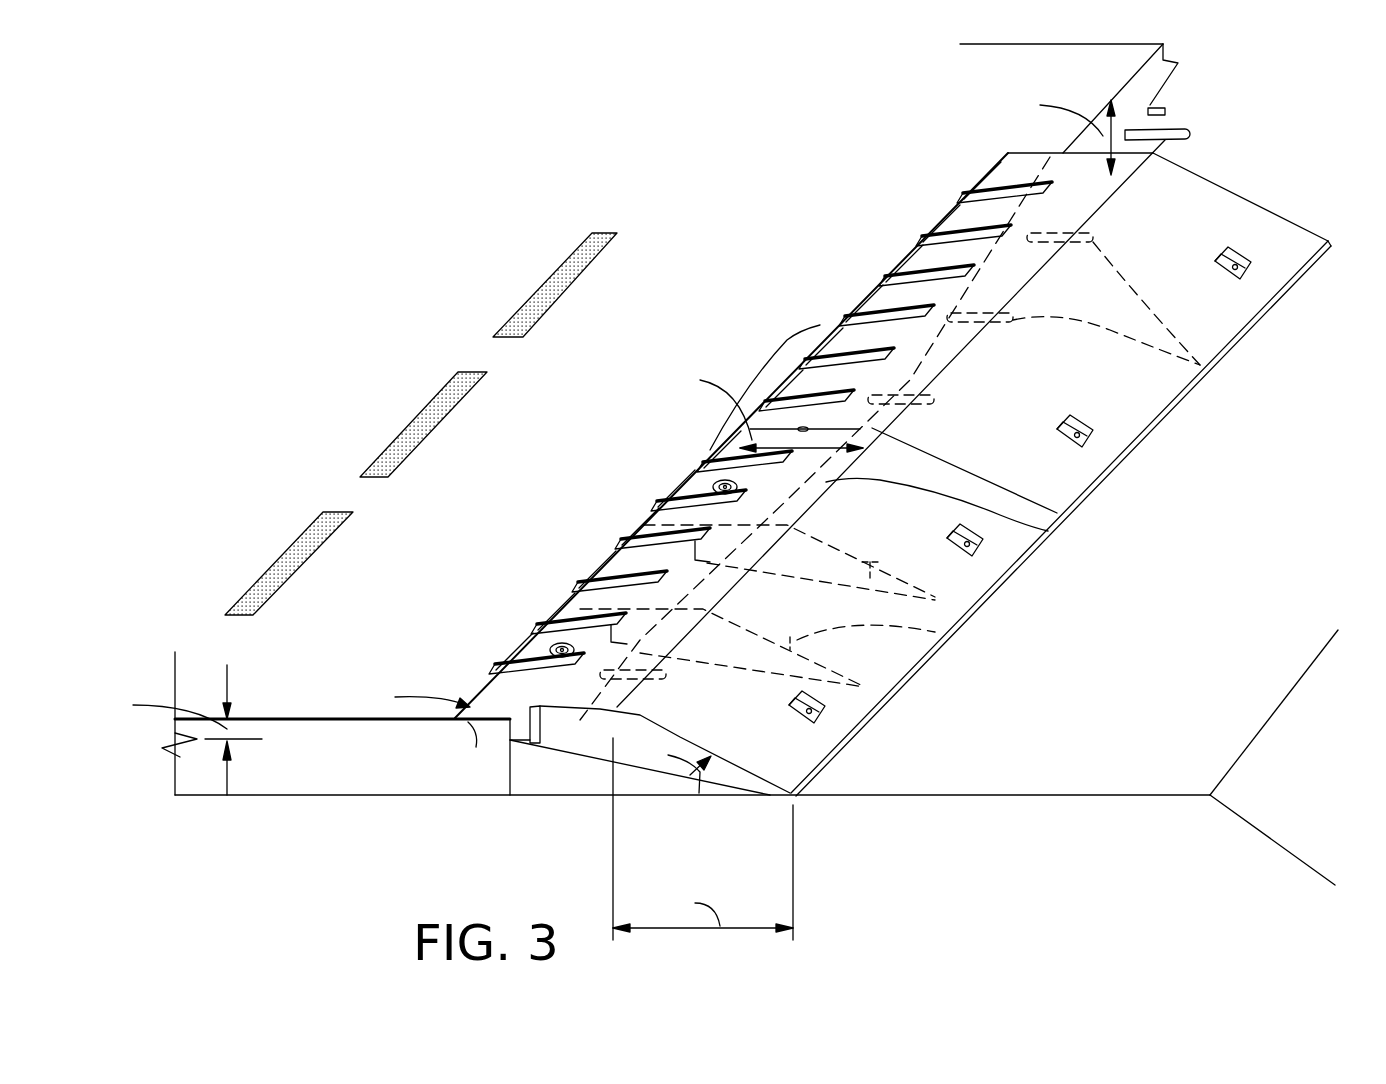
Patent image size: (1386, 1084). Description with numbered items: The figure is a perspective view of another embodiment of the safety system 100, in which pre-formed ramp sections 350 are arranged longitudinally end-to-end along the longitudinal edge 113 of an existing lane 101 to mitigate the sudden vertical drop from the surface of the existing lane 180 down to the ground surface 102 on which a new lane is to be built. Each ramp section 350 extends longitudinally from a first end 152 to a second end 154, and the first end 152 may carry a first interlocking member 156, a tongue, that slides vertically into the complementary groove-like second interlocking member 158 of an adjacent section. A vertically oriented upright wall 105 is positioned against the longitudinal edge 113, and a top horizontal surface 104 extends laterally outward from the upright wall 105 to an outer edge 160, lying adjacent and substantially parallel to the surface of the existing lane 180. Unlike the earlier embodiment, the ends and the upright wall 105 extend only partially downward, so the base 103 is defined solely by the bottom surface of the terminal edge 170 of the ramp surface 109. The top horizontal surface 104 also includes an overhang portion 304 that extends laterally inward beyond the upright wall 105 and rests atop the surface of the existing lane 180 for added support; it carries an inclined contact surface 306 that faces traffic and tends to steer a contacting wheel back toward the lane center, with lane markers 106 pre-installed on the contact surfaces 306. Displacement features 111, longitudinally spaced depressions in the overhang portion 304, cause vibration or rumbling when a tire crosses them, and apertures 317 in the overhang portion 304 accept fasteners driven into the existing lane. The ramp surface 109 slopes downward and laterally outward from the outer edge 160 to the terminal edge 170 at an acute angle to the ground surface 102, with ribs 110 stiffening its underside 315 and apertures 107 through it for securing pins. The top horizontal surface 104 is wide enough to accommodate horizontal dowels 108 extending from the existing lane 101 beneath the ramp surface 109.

The safety system 100 is at (1284, 142).
The existing lane 101 is at (654, 222).
The ground surface 102 is at (1165, 760).
The base 103 is at (775, 826).
The top horizontal surface 104 is at (800, 410).
The upright wall 105 is at (509, 722).
The lane marker 106 is at (905, 257).
The aperture 107 is at (983, 546).
The horizontal dowels 108 is at (1203, 366).
The ramp surface 109 is at (937, 598).
The rib 110 is at (940, 630).
The displacement feature 111 is at (720, 448).
The longitudinal edge 113 is at (1135, 118).
The first end 152 is at (628, 768).
The second end 154 is at (940, 440).
The first interlocking member 156 is at (498, 732).
The second interlocking member 158 is at (833, 440).
The outer edge 160 is at (1048, 531).
The terminal edge 170 is at (862, 726).
The surface of the existing lane 180 is at (366, 621).
The overhang portion 304 is at (640, 575).
The contact surface 306 is at (522, 652).
The underside 315 is at (526, 772).
The aperture 317 is at (714, 484).
The ramp section 350 is at (1247, 330).